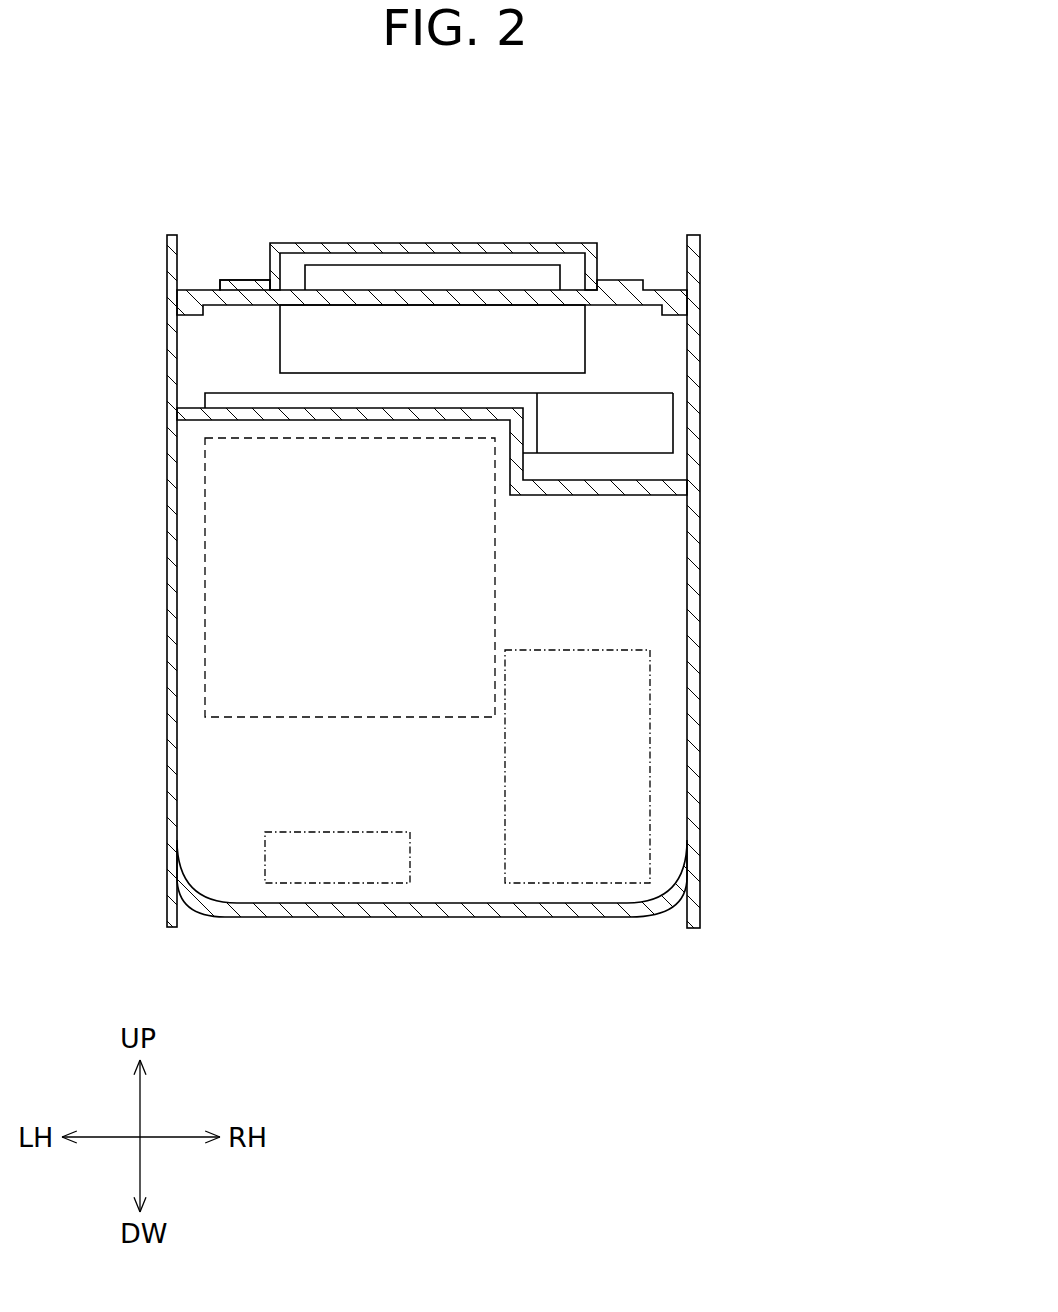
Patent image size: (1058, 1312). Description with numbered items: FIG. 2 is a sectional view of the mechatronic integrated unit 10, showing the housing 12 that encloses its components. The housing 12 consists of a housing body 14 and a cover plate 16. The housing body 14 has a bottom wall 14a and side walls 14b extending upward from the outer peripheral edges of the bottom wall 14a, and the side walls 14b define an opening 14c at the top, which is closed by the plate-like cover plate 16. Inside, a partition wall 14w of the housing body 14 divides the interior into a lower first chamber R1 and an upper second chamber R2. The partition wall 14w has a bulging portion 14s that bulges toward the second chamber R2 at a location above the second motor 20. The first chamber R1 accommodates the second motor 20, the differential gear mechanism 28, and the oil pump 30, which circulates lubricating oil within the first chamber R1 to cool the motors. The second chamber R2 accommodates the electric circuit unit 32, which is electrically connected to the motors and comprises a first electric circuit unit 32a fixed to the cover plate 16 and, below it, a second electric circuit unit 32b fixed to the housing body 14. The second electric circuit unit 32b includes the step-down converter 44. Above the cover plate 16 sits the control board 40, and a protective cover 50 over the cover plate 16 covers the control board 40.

The mechatronic integrated unit 10 is at (732, 132).
The housing 12 is at (767, 275).
The housing body 14 is at (700, 608).
The bottom wall 14a is at (553, 917).
The side walls 14b is at (700, 668).
The opening 14c is at (647, 300).
The bulging portion 14s is at (253, 408).
The partition wall 14w is at (202, 418).
The cover plate 16 is at (205, 287).
The second motor 20 is at (205, 652).
The differential gear mechanism 28 is at (650, 750).
The oil pump 30 is at (325, 883).
The electric circuit unit 32 is at (875, 357).
The first electric circuit unit 32a is at (593, 352).
The second electric circuit unit 32b is at (598, 423).
The step-down converter 44 is at (677, 438).
The control board 40 is at (515, 263).
The protective cover 50 is at (557, 245).
The first chamber R1 is at (663, 837).
The second chamber R2 is at (672, 340).